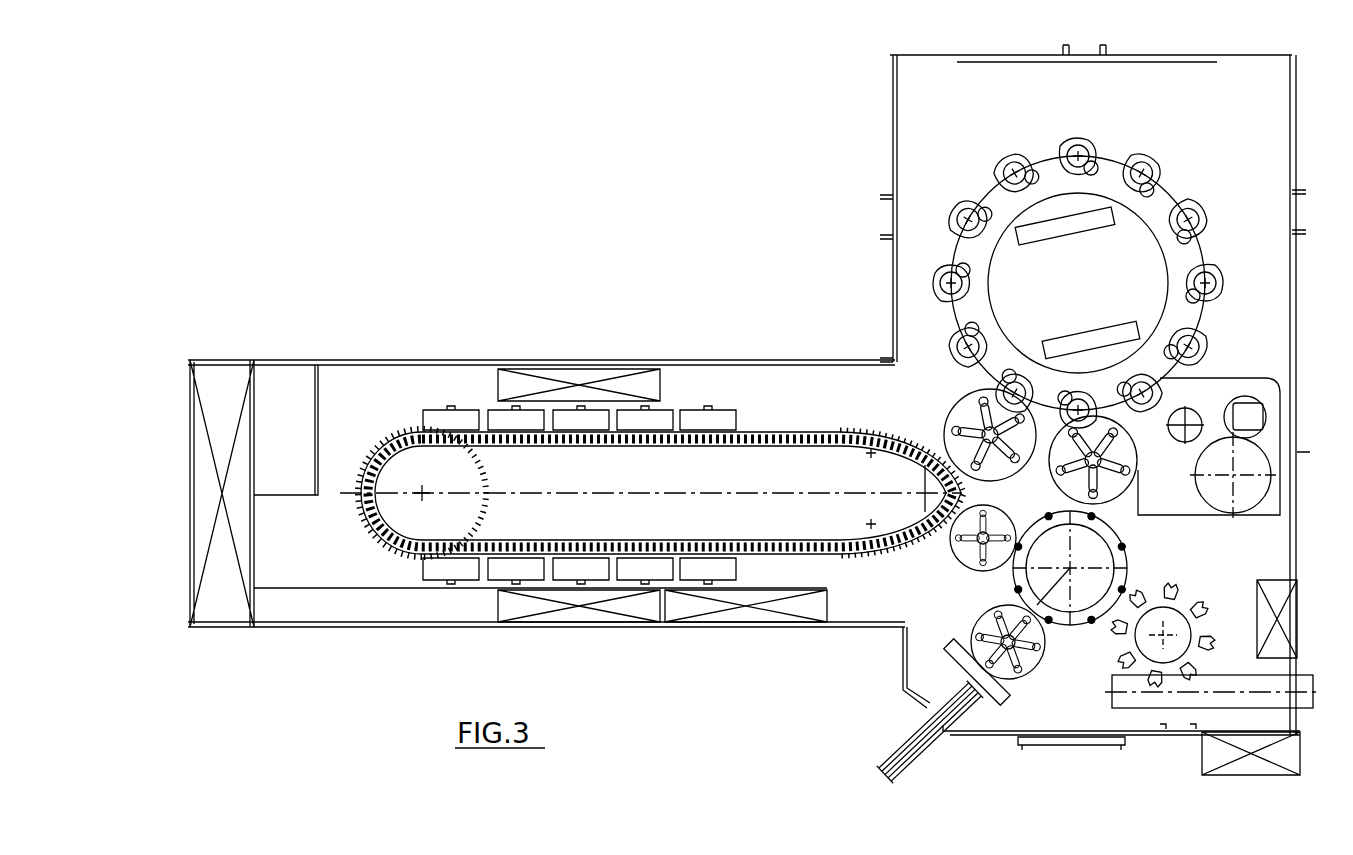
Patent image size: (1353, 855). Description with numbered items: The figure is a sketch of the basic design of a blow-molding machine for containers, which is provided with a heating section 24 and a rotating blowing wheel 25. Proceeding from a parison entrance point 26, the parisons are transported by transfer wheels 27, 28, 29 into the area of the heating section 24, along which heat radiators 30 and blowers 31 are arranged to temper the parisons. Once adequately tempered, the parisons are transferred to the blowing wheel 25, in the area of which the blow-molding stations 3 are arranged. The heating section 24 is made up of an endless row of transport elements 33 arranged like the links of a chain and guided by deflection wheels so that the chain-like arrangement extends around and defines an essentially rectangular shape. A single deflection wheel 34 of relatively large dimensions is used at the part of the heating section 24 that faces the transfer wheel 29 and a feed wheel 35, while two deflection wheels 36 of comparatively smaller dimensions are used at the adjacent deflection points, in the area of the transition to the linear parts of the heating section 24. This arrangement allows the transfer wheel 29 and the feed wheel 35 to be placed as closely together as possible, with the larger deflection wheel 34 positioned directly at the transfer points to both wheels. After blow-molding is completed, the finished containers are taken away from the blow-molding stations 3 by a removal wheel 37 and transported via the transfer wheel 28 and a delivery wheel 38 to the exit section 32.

The blow-molding station 3 is at (945, 262).
The heating section 24 is at (703, 392).
The blowing wheel 25 is at (1018, 222).
The parison entrance point 26 is at (932, 738).
The transfer wheel 27 is at (1022, 680).
The transfer wheel 28 is at (1073, 622).
The transfer wheel 29 is at (955, 578).
The heat radiator 30 is at (466, 413).
The blower 31 is at (575, 385).
The exit section 32 is at (1307, 700).
The transport element 33 is at (398, 553).
The deflection wheel 34 is at (424, 492).
The feed wheel 35 is at (967, 387).
The deflection wheel 36 is at (828, 432).
The removal wheel 37 is at (1143, 478).
The delivery wheel 38 is at (1172, 647).